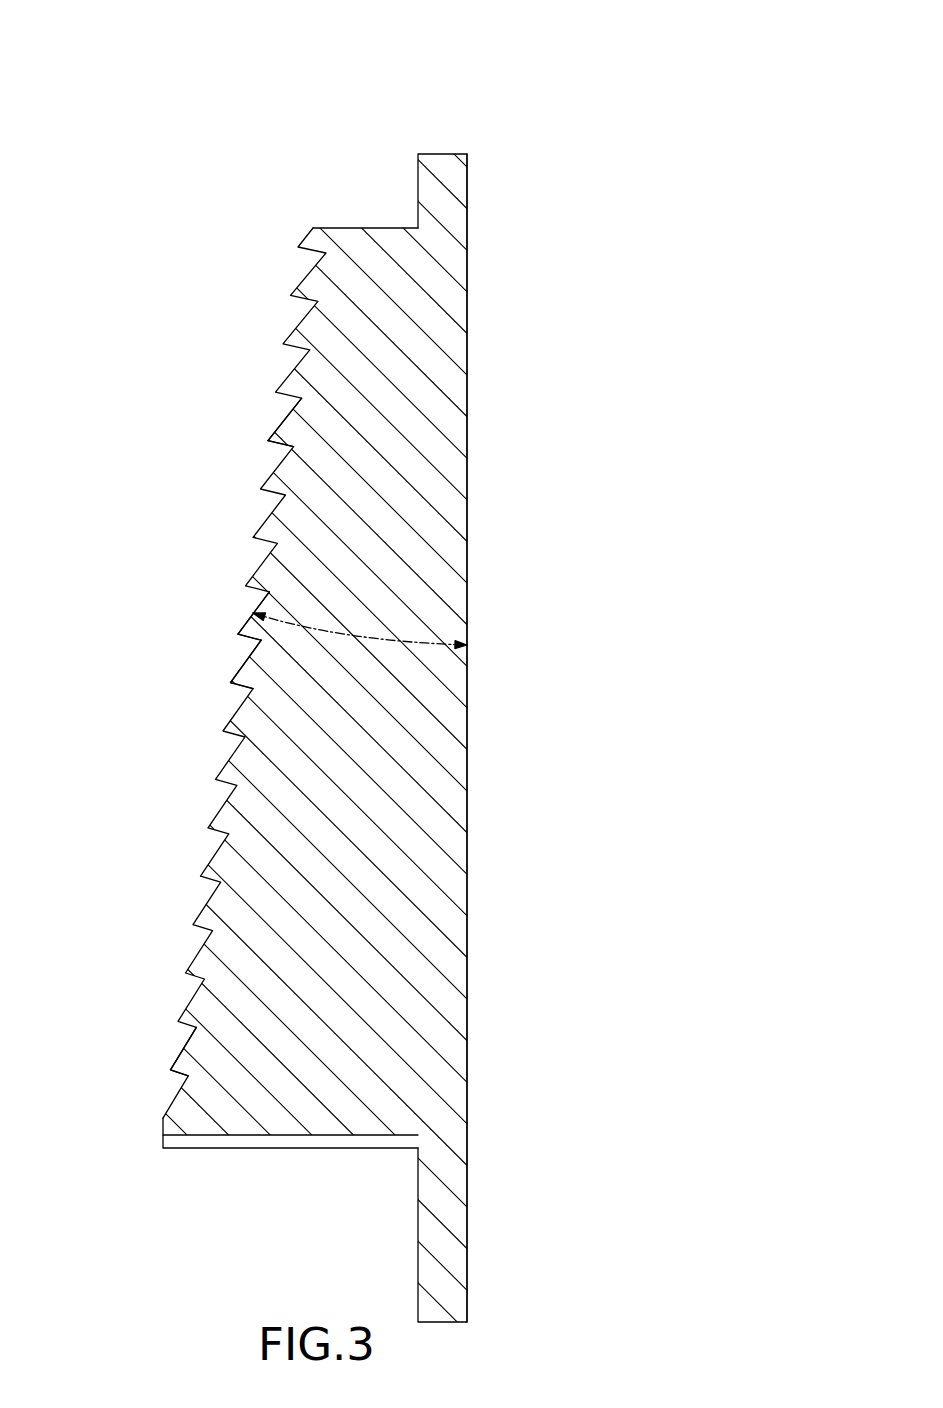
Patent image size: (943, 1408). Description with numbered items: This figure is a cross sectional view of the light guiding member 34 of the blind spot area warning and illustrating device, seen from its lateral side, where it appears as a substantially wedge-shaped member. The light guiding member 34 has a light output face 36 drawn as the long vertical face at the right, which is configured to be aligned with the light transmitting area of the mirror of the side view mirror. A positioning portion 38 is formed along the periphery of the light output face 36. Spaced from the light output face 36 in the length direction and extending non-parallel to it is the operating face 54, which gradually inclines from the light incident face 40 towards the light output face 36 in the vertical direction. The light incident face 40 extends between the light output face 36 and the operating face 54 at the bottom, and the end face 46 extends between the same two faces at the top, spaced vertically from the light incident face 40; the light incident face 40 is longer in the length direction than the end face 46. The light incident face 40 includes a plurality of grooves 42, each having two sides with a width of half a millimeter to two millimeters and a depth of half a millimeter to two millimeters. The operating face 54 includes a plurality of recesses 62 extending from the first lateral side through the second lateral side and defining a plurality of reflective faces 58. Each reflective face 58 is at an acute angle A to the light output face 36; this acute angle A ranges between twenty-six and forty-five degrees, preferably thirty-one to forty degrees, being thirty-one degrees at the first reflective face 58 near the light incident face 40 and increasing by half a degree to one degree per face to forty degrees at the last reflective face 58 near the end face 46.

The light guiding member 34 is at (540, 133).
The light output face 36 is at (467, 808).
The positioning portion 38 is at (447, 1277).
The light incident face 40 is at (317, 1148).
The grooves 42 is at (350, 1137).
The end face 46 is at (373, 228).
The operating face 54 is at (248, 557).
The reflective faces 58 is at (283, 422).
The recesses 62 is at (280, 452).
The acute angle A is at (373, 640).